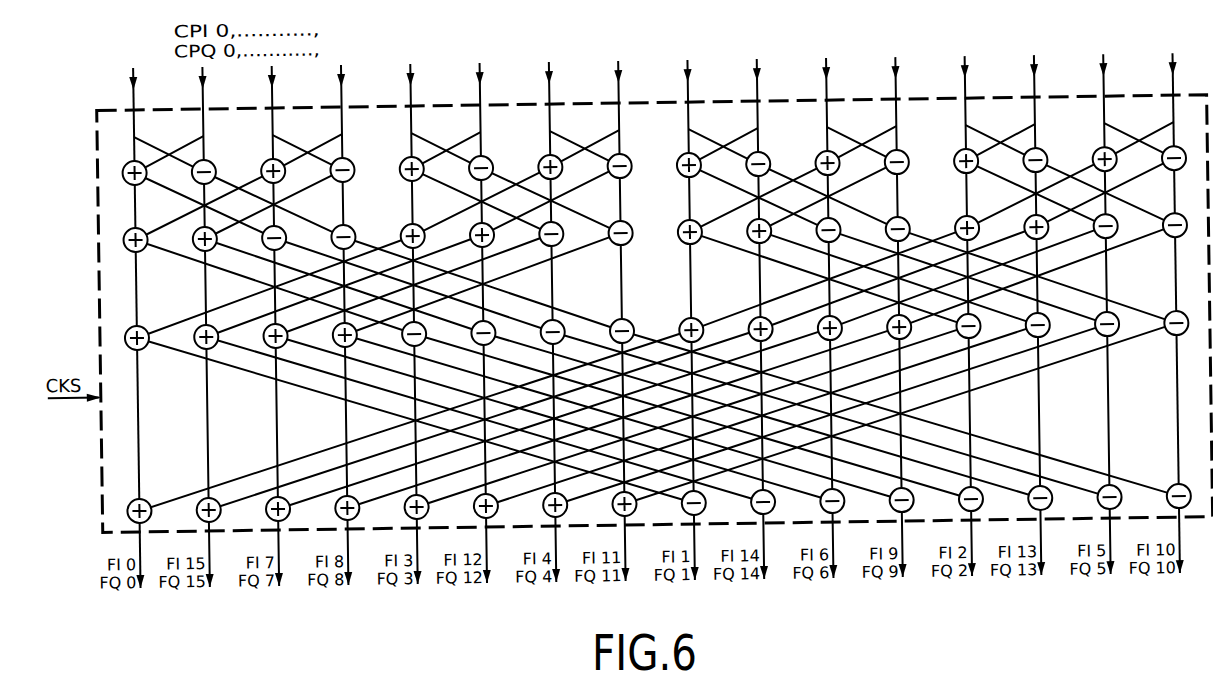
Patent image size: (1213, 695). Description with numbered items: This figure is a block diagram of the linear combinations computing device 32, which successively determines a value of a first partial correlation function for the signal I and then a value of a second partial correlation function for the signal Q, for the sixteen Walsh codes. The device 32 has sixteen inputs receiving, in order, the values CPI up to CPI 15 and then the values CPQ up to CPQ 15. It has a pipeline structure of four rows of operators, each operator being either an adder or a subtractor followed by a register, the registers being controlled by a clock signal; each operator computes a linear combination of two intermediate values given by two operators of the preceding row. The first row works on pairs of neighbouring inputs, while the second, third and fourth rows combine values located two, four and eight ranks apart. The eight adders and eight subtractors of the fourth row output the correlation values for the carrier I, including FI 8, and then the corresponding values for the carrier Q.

The bus width (8-bit signal line) 8 is at (140, 122).
The linear combinations computing device 32 is at (920, 100).
The input line CPI 15 / CPQ 15 is at (754, 296).